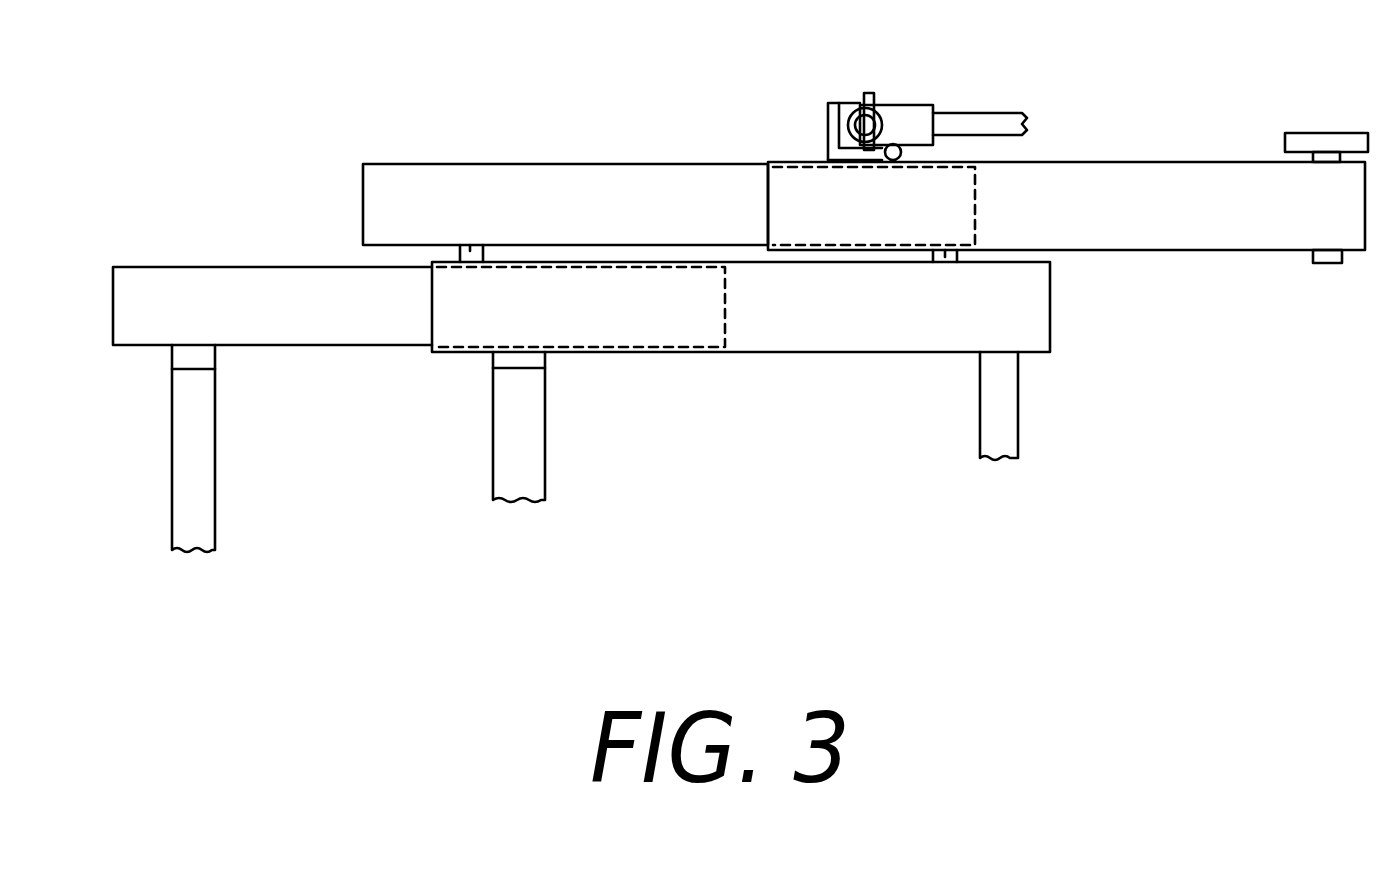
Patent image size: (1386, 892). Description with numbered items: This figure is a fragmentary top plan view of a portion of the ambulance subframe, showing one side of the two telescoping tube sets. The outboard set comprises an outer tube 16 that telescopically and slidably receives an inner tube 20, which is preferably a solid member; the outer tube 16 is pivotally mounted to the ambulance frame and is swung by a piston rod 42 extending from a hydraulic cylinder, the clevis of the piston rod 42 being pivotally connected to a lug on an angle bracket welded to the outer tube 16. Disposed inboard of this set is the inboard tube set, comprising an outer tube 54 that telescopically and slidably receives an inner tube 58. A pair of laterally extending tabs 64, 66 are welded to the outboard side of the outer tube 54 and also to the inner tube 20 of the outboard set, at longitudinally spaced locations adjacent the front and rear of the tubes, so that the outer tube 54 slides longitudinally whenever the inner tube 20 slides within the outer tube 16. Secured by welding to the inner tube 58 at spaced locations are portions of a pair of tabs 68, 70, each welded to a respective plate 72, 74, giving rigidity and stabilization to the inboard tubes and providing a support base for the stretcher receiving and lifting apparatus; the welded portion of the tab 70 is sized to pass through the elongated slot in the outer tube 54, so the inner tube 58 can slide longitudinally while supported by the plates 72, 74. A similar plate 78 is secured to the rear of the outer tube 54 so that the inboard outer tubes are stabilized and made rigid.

The outer tube 16 is at (1105, 162).
The inner tube 20 is at (567, 164).
The piston rod 42 is at (977, 110).
The outer tube 54 is at (665, 352).
The inner tube 58 is at (165, 266).
The laterally extending tab 64 is at (470, 250).
The laterally extending tab 66 is at (945, 263).
The tab 68 is at (172, 354).
The tab 70 is at (545, 358).
The plate 72 is at (215, 485).
The plate 74 is at (493, 393).
The plate 78 is at (1015, 377).